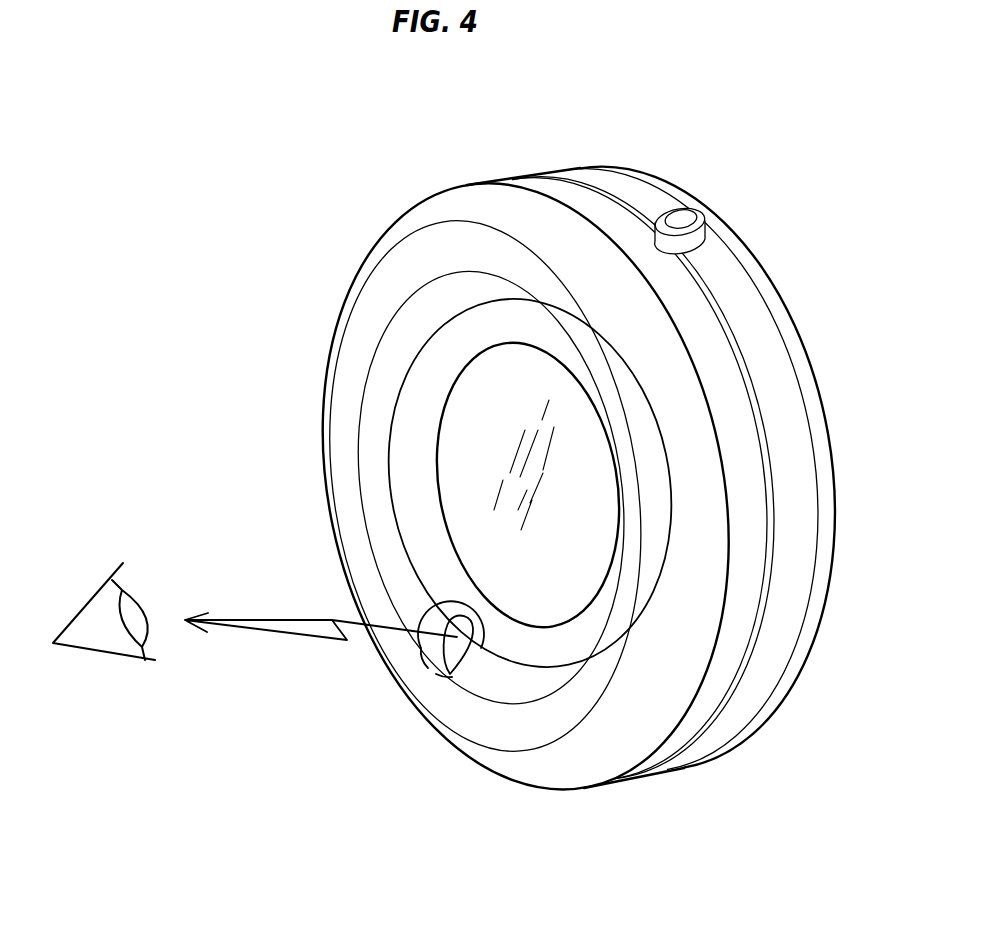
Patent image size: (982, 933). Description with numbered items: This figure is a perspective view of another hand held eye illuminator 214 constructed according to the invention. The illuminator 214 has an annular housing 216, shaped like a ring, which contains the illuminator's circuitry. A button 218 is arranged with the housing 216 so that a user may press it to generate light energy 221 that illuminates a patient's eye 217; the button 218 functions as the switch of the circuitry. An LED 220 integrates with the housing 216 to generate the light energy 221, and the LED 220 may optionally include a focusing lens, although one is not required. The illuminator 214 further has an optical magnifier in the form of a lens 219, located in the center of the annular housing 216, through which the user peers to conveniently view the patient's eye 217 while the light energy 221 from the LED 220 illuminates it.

The hand held illuminator 214 is at (192, 294).
The annular housing 216 is at (780, 370).
The patient's eye 217 is at (75, 588).
The button 218 is at (708, 222).
The lens 219 is at (585, 551).
The LED 220 is at (425, 661).
The light energy 221 is at (268, 621).